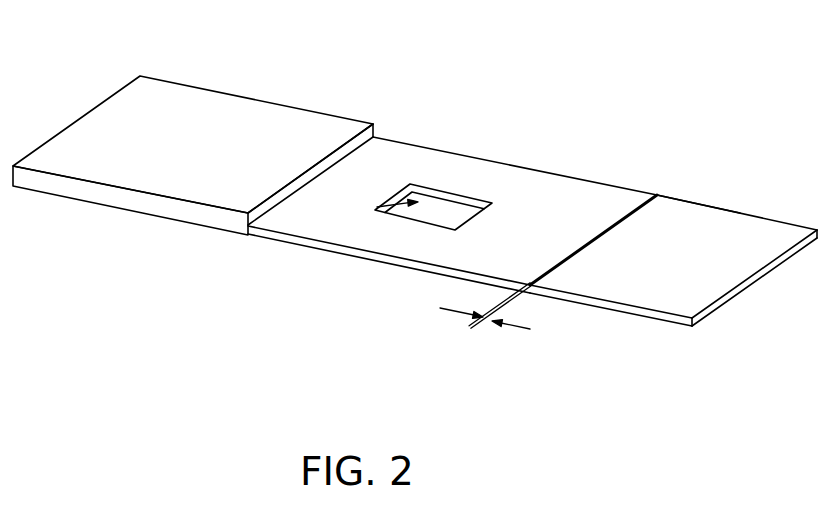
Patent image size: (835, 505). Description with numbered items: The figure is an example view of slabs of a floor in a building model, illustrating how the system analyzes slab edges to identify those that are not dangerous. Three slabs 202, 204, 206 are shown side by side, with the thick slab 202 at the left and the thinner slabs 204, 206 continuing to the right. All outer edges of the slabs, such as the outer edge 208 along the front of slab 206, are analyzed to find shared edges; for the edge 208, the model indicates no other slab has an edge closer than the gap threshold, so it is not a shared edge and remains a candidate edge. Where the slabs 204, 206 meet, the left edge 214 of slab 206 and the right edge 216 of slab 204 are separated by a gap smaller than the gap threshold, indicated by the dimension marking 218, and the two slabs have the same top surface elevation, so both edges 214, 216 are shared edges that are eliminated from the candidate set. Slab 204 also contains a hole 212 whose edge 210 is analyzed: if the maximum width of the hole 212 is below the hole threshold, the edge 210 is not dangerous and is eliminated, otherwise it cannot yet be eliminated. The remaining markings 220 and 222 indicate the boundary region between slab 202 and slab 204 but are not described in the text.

The slab 202 is at (193, 155).
The slab 204 is at (452, 215).
The slab 206 is at (673, 260).
The outer edge 208 is at (612, 306).
The edge of the hole 210 is at (455, 194).
The hole 212 is at (377, 207).
The left edge 214 is at (652, 207).
The right edge 216 is at (608, 228).
The fold line thickness 218 is at (530, 290).
The edge of first block 220 is at (329, 156).
The junction of block and panel 222 is at (360, 146).